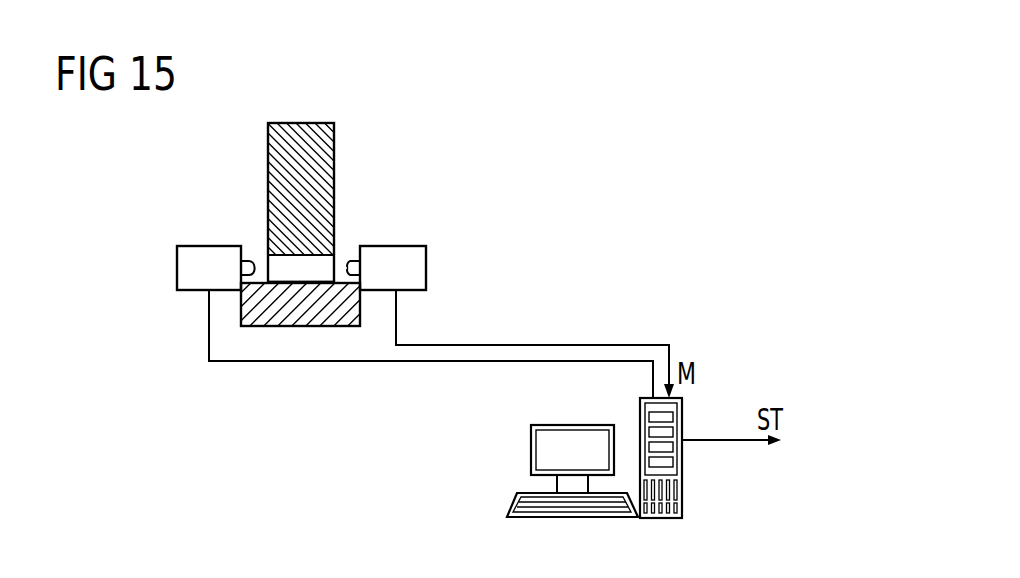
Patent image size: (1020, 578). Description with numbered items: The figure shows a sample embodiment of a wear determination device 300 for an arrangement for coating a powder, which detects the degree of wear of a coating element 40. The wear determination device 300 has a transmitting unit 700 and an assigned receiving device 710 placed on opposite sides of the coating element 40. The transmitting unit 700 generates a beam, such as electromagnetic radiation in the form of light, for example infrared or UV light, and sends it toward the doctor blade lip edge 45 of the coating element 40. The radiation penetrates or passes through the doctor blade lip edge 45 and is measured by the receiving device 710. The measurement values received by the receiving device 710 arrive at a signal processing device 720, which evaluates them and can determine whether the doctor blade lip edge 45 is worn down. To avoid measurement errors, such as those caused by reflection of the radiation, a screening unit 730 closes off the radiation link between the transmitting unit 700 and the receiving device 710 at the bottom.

The wear determination device 300 is at (660, 203).
The coating element 40 is at (321, 190).
The doctor blade lip edge 45 is at (283, 265).
The transmitting unit 700 is at (185, 268).
The receiving device 710 is at (418, 270).
The screening unit 730 is at (303, 326).
The signal processing device 720 is at (680, 477).